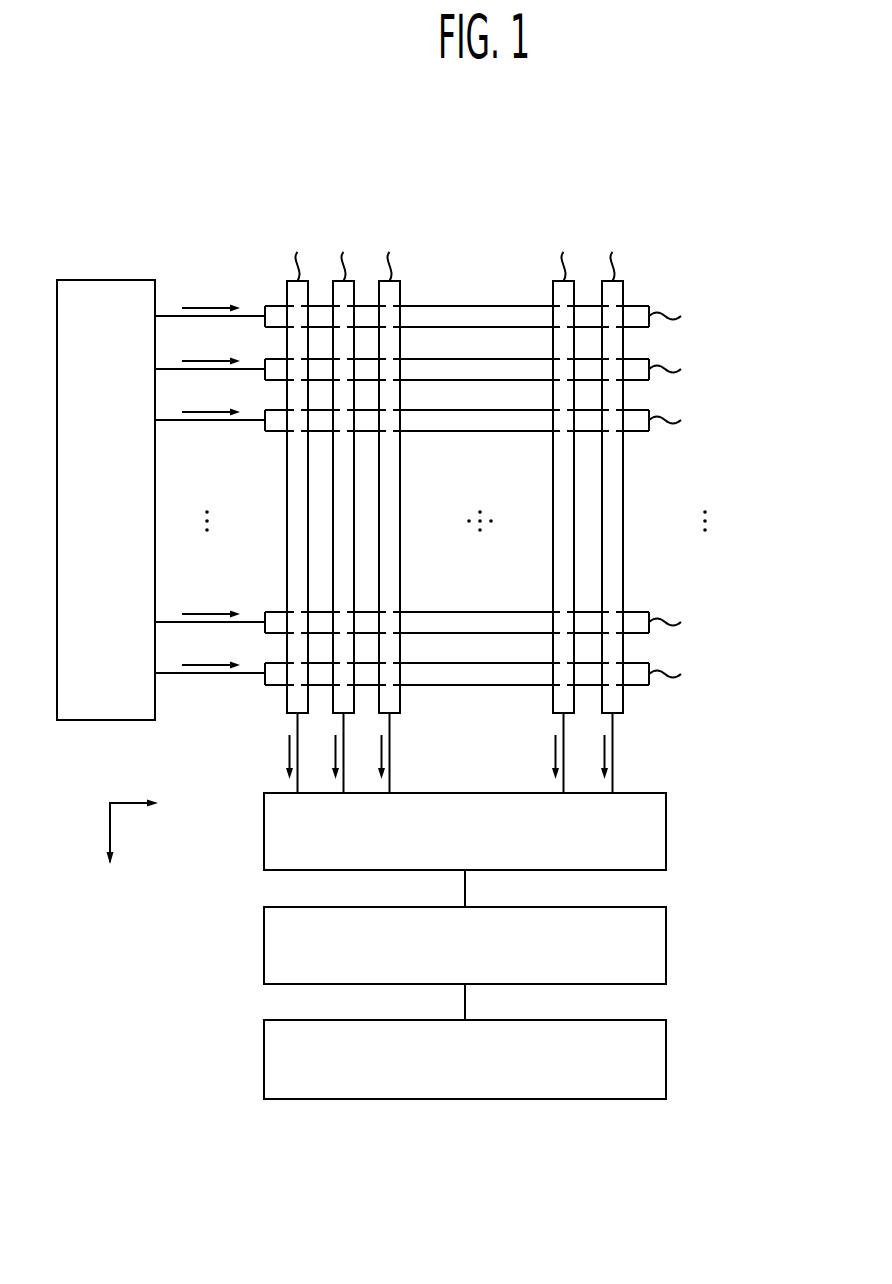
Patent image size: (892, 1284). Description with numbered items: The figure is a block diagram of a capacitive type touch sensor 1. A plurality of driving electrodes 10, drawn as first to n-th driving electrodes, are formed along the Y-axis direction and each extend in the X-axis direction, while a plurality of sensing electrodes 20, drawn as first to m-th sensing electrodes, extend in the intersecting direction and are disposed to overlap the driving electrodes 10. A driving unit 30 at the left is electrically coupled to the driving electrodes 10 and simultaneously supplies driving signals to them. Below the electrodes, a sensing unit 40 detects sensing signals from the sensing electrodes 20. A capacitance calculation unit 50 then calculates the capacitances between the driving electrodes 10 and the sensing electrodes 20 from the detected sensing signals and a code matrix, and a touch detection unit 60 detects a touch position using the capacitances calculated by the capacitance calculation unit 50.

The touch sensor 1 is at (770, 197).
The driving electrode 10 is at (746, 303).
The sensing electrode 20 is at (653, 226).
The driving unit 30 is at (96, 280).
The sensing unit 40 is at (666, 822).
The capacitance calculation unit 50 is at (666, 935).
The touch detection unit 60 is at (666, 1050).